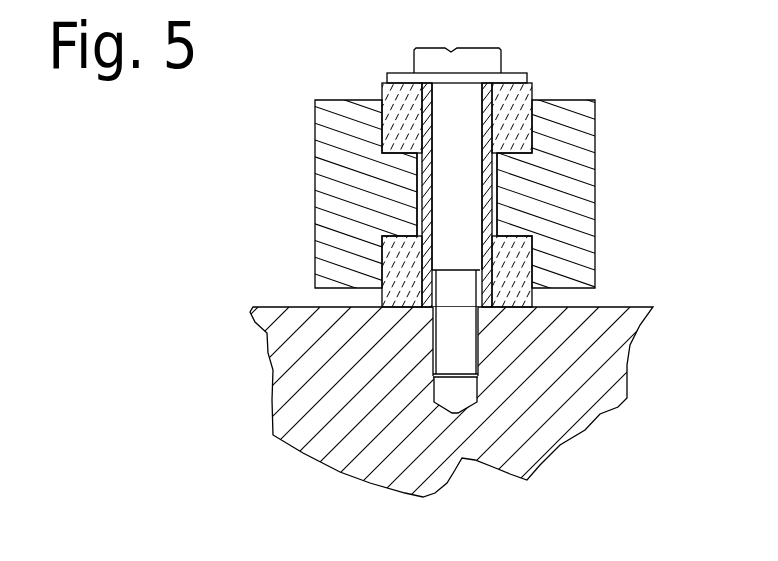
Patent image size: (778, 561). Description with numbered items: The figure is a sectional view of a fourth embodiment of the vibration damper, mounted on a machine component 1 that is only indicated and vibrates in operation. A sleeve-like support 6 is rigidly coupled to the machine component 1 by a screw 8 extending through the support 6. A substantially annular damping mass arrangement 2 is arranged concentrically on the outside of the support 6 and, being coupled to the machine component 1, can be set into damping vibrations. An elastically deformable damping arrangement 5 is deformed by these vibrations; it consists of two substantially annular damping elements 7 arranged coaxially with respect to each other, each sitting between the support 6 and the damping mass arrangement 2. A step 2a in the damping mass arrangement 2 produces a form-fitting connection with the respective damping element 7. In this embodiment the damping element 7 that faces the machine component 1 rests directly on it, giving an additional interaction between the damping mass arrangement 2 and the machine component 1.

The machine component 1 is at (487, 433).
The damping mass arrangement 2 is at (580, 228).
The step 2a is at (513, 225).
The damping arrangement 5 is at (530, 128).
The damping element 7 is at (528, 290).
The support 6 is at (486, 283).
The screw 8 is at (462, 120).